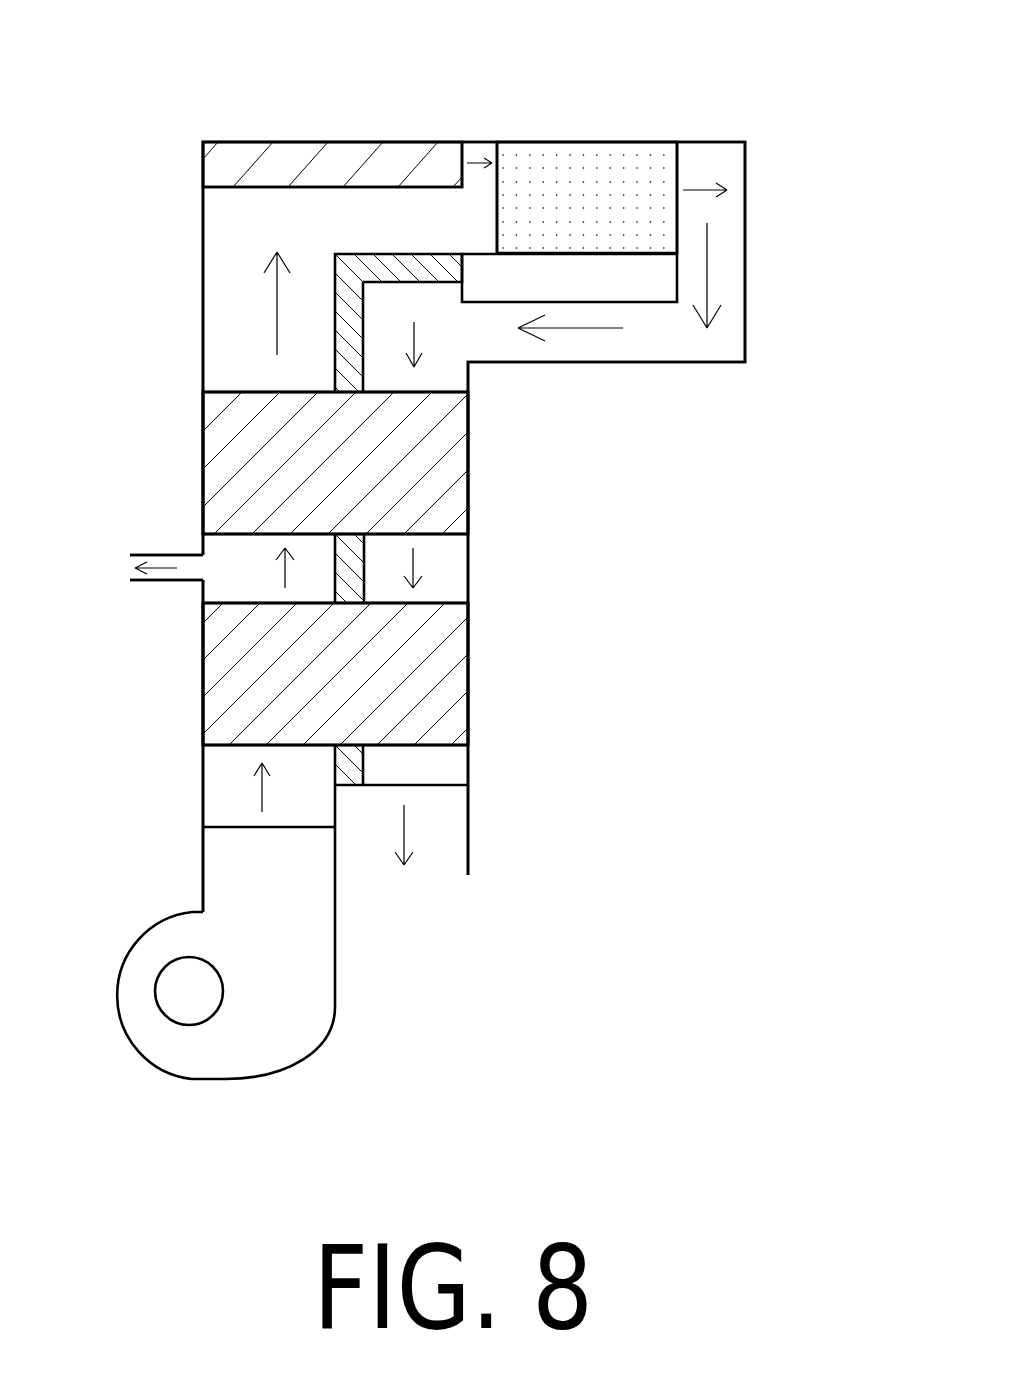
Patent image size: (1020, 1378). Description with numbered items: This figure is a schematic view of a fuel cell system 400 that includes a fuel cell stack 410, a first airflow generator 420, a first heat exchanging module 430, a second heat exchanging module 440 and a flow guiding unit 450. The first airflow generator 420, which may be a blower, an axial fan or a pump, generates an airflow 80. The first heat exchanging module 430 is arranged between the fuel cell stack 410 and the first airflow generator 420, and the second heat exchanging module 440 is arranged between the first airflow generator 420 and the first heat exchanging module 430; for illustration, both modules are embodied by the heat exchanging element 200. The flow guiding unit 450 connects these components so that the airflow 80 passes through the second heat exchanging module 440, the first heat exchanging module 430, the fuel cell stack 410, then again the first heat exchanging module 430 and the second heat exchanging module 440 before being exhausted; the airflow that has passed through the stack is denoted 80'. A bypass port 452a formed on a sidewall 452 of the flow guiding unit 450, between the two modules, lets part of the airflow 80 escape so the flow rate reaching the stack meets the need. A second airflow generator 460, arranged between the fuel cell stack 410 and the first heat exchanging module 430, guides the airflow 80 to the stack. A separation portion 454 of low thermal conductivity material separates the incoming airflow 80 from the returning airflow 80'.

The fuel cell system 400 is at (718, 857).
The fuel cell stack 410 is at (590, 157).
The first airflow generator 420 is at (335, 970).
The heat exchanging element 200 is at (335, 568).
The first heat exchanging module 430 is at (453, 457).
The second heat exchanging module 440 is at (453, 682).
The flow guiding unit 450 is at (468, 572).
The sidewall 452 is at (203, 347).
The bypass port 452a is at (205, 563).
The separation portion 454 is at (347, 258).
The second airflow generator 460 is at (312, 148).
The airflow 80 is at (187, 534).
The airflow (after flowing through the fuel cell stack) 80' is at (596, 461).